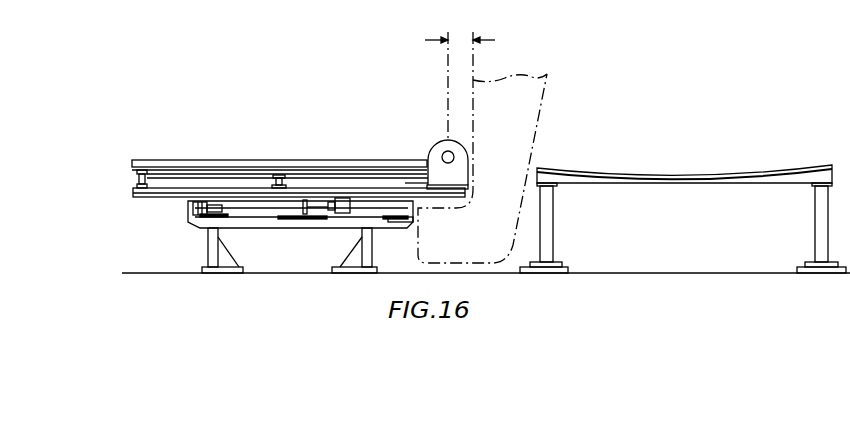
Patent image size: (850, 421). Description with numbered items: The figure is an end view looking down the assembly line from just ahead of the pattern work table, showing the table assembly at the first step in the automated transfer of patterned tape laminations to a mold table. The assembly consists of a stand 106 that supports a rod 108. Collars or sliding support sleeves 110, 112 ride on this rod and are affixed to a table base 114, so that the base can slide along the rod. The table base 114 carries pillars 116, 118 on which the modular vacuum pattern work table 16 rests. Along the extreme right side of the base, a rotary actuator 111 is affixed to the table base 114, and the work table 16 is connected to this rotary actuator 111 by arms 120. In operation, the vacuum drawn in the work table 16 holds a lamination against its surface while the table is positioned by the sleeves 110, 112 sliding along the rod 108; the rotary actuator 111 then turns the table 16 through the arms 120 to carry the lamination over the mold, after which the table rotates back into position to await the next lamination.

The modular vacuum pattern work table 16 is at (138, 160).
The stand 106 is at (208, 260).
The rod 108 is at (237, 200).
The sliding support sleeve 110 is at (222, 212).
The rotary actuator 111 is at (445, 151).
The sliding support sleeve 112 is at (349, 214).
The table base 114 is at (137, 194).
The pillar 116 is at (137, 179).
The pillar 118 is at (283, 180).
The arm 120 is at (188, 181).